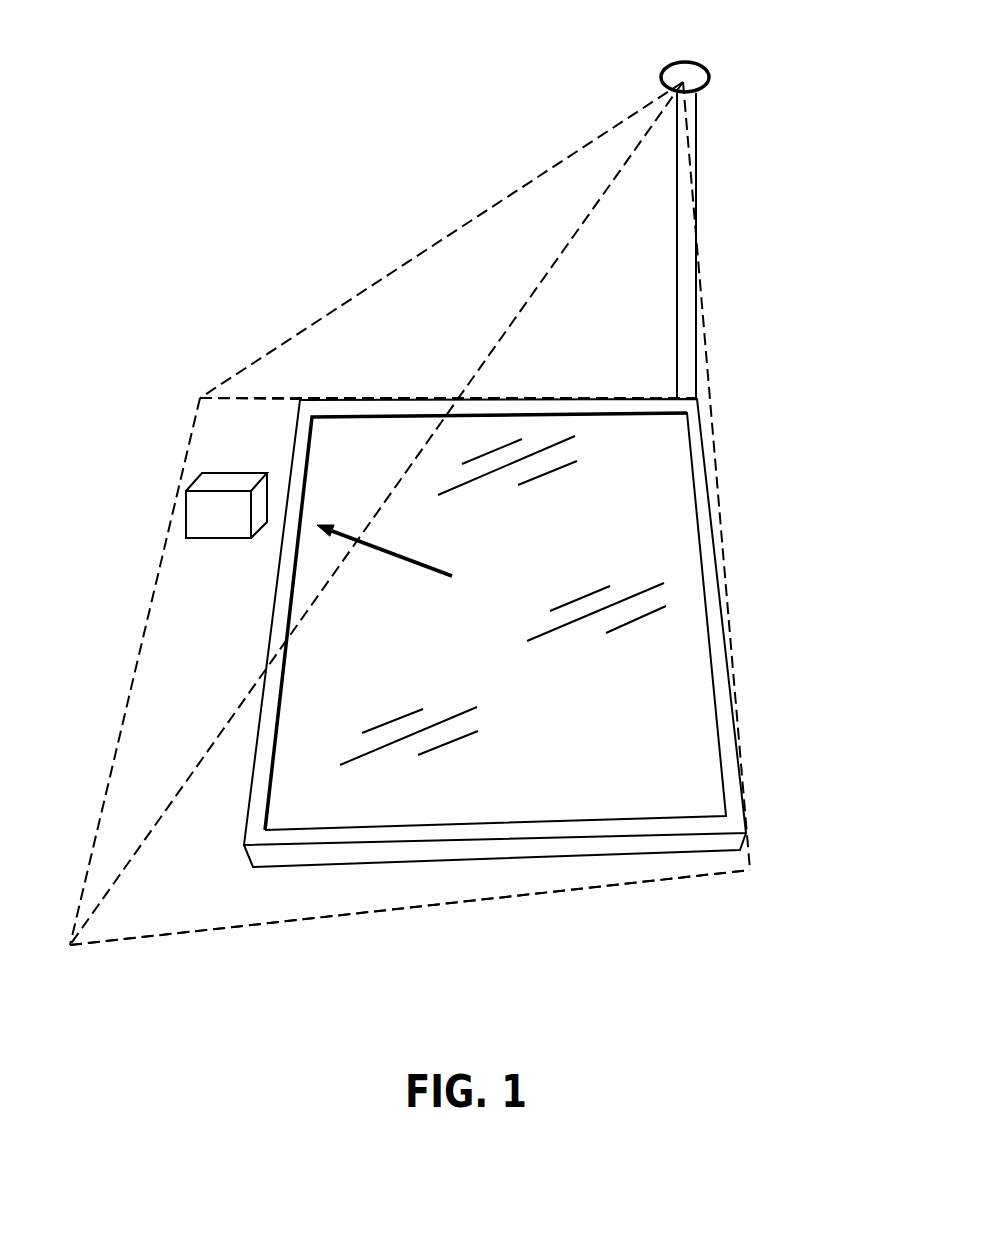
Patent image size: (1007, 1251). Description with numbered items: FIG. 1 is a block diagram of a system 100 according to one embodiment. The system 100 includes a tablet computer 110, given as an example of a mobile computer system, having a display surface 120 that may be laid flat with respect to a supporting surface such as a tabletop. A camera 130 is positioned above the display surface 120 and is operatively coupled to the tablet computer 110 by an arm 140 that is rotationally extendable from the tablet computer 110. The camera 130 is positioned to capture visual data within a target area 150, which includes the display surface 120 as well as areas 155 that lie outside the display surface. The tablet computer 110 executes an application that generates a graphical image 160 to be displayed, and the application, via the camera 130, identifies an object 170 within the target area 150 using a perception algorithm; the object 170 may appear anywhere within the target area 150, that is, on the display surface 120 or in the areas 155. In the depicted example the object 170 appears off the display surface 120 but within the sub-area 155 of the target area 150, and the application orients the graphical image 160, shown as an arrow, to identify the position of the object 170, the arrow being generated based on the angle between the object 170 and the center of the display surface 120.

The system 100 is at (775, 982).
The tablet computer 110 is at (727, 650).
The display surface 120 is at (653, 512).
The camera 130 is at (708, 76).
The arm 140 is at (697, 185).
The target area 150 is at (117, 740).
The areas outside the display surface 155 is at (212, 417).
The graphical image 160 is at (425, 572).
The object 170 is at (215, 513).